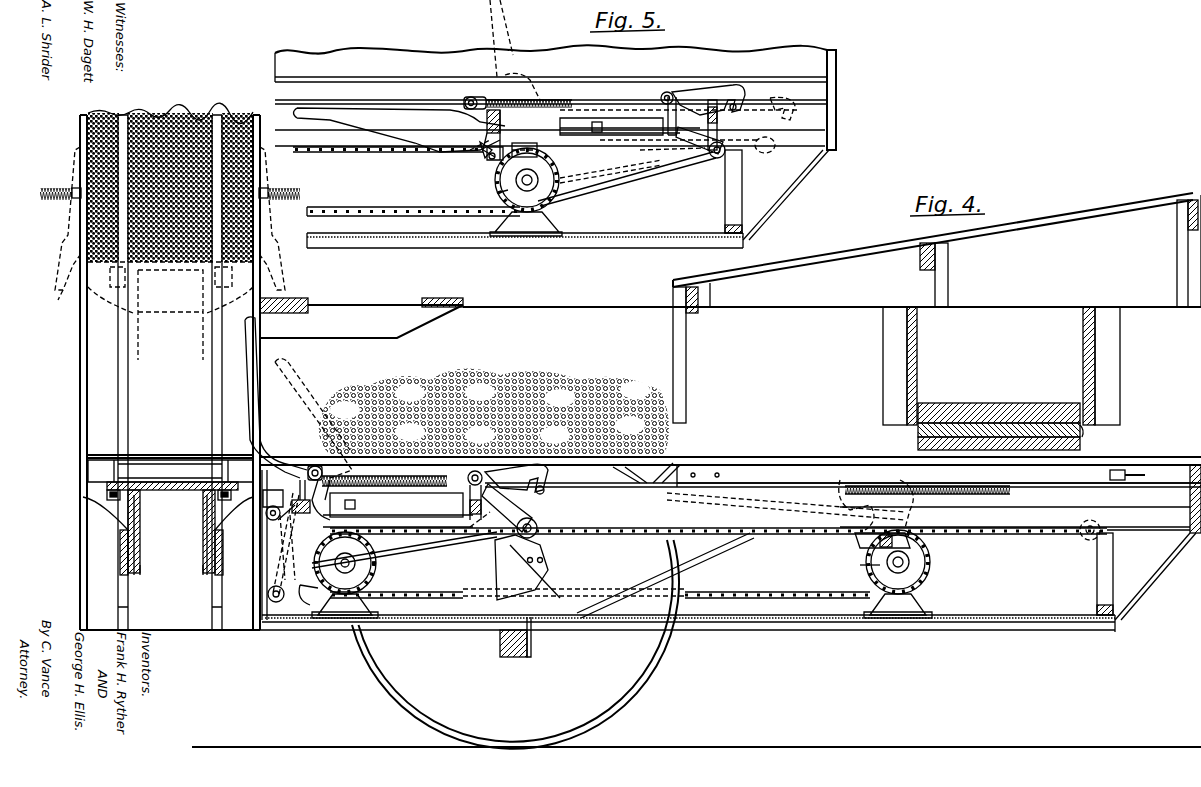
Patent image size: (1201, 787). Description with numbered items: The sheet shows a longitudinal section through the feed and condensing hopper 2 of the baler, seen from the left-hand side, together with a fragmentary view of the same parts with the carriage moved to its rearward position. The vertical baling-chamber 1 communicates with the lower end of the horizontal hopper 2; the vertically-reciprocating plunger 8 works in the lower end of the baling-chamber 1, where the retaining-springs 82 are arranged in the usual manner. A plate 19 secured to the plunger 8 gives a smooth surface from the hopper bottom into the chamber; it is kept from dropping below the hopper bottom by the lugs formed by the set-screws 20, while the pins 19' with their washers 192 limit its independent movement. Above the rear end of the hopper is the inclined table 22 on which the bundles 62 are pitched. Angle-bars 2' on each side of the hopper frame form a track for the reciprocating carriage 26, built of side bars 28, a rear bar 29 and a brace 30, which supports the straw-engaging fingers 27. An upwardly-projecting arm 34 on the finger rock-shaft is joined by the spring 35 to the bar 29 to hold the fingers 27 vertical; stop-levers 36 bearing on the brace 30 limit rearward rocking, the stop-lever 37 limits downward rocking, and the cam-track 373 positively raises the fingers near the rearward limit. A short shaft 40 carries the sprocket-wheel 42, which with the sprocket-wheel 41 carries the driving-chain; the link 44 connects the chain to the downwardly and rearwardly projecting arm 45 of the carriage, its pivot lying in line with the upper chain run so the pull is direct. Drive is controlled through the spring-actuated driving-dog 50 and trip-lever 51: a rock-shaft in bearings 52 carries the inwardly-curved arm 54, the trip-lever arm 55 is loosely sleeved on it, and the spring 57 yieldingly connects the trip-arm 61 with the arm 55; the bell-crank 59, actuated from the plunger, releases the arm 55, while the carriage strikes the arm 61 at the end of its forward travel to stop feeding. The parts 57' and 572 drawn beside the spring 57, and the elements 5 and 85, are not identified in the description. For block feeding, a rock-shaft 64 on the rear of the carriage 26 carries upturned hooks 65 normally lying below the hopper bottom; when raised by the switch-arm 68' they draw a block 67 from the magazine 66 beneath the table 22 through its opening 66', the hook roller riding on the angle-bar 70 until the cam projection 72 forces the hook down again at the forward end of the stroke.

In FIG. 4, the baling-chamber 1 is at (170, 372).
In FIG. 5, the feed and condensing hopper 2 is at (551, 102).
In FIG. 4, the feed and condensing hopper 2 is at (640, 465).
In FIG. 5, the angle-bars 2' is at (578, 149).
In FIG. 4, the angle-bars 2' is at (1020, 542).
In FIG. 4, the wheel 5 is at (640, 683).
In FIG. 4, the plunger 8 is at (169, 523).
In FIG. 4, the retaining-springs 82 is at (60, 270).
In FIG. 4, the spout flange 85 is at (140, 565).
In FIG. 4, the plate 19 is at (170, 448).
In FIG. 4, the pins 19' is at (170, 469).
In FIG. 4, the washers 192 is at (140, 490).
In FIG. 4, the set-screws 20 is at (170, 471).
In FIG. 4, the inclined table 22 is at (1088, 212).
In FIG. 5, the carriage 26 is at (583, 145).
In FIG. 4, the carriage 26 is at (492, 488).
In FIG. 5, the straw-engaging fingers 27 is at (372, 130).
In FIG. 4, the straw-engaging fingers 27 is at (258, 411).
In FIG. 5, the side bars 28 is at (518, 95).
In FIG. 4, the side bars 28 is at (352, 470).
In FIG. 5, the rear bar 29 is at (620, 167).
In FIG. 4, the rear bar 29 is at (470, 575).
In FIG. 5, the brace 30 is at (611, 126).
In FIG. 5, the upwardly-projecting arm 34 is at (466, 101).
In FIG. 5, the spring 35 is at (525, 100).
In FIG. 5, the stop-levers 36 is at (487, 110).
In FIG. 4, the stop-levers 36 is at (318, 468).
In FIG. 5, the stop-lever 37 is at (517, 158).
In FIG. 4, the cam-track 373 is at (876, 516).
In FIG. 5, the short shaft 40 is at (537, 188).
In FIG. 4, the short shaft 40 is at (910, 562).
In FIG. 4, the sprocket-wheel 41 is at (370, 575).
In FIG. 5, the sprocket-wheel 42 is at (497, 193).
In FIG. 4, the sprocket-wheel 42 is at (880, 575).
In FIG. 5, the link 44 is at (660, 172).
In FIG. 4, the link 44 is at (406, 550).
In FIG. 5, the arm 45 is at (715, 158).
In FIG. 4, the arm 45 is at (757, 598).
In FIG. 4, the driving-dog 50 is at (396, 505).
In FIG. 5, the trip-lever 51 is at (488, 150).
In FIG. 4, the trip-lever 51 is at (288, 503).
In FIG. 5, the bearings 52 is at (470, 150).
In FIG. 4, the bearings 52 is at (278, 520).
In FIG. 4, the inwardly-curved arm 54 is at (312, 468).
In FIG. 4, the trip-lever arm 55 is at (255, 604).
In FIG. 5, the spring 57 is at (477, 170).
In FIG. 4, the cam arm 57' is at (278, 553).
In FIG. 4, the cam roller 572 is at (270, 520).
In FIG. 4, the bell-crank 59 is at (305, 590).
In FIG. 4, the trip-arm 61 is at (268, 574).
In FIG. 4, the bundles 62 is at (178, 112).
In FIG. 5, the rock-shaft 64 is at (669, 92).
In FIG. 4, the rock-shaft 64 is at (468, 477).
In FIG. 5, the hooks 65 is at (695, 98).
In FIG. 4, the hooks 65 is at (538, 470).
In FIG. 4, the magazine 66 is at (1001, 366).
In FIG. 4, the opening 66' is at (982, 426).
In FIG. 4, the blocks 67 is at (1082, 433).
In FIG. 4, the switch-arm 68' is at (1011, 480).
In FIG. 4, the angle-bar 70 is at (939, 476).
In FIG. 4, the cam projection 72 is at (645, 483).